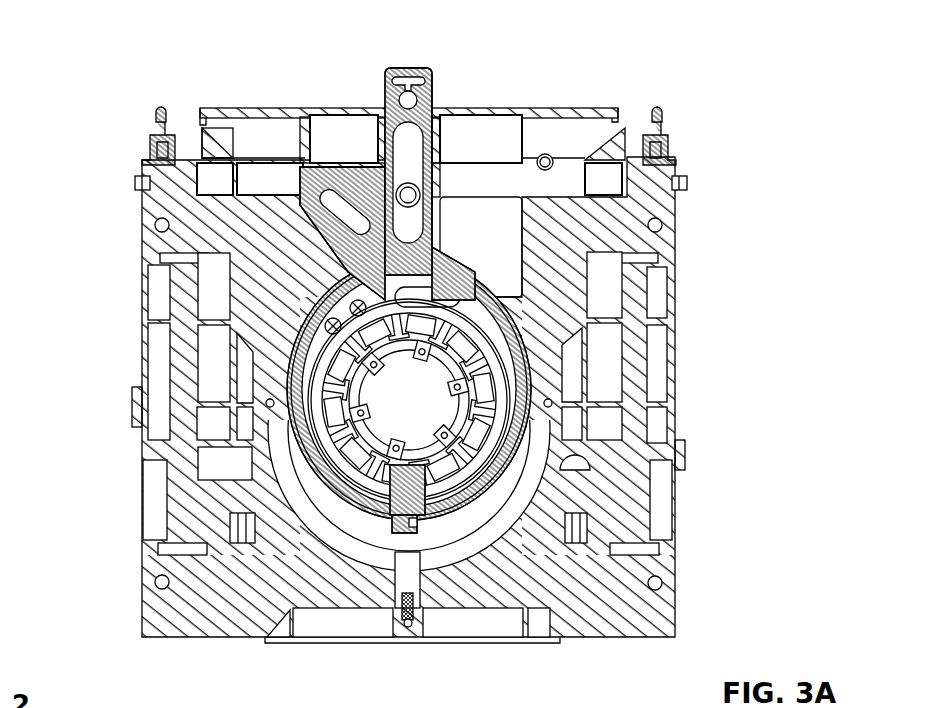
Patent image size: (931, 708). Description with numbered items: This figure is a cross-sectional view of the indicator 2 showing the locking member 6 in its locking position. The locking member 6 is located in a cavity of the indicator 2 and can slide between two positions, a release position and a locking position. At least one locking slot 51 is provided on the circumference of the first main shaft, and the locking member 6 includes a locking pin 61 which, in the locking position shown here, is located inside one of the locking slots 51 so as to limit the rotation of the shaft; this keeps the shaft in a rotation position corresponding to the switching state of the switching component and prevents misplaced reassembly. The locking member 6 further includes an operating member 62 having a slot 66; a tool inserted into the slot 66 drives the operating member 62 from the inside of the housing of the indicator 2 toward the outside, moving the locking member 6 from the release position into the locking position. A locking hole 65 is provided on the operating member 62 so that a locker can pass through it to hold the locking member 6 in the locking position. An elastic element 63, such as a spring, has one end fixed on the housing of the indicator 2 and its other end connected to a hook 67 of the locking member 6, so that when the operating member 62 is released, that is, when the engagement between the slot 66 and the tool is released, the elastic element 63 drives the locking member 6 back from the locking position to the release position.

The indicator 2 is at (116, 60).
The locking member 6 is at (300, 448).
The locking slot 51 is at (448, 455).
The locking pin 61 is at (390, 498).
The operating member 62 is at (385, 90).
The elastic element 63 is at (436, 505).
The locking hole 65 is at (440, 90).
The slot 66 is at (415, 70).
The hook 67 is at (395, 530).